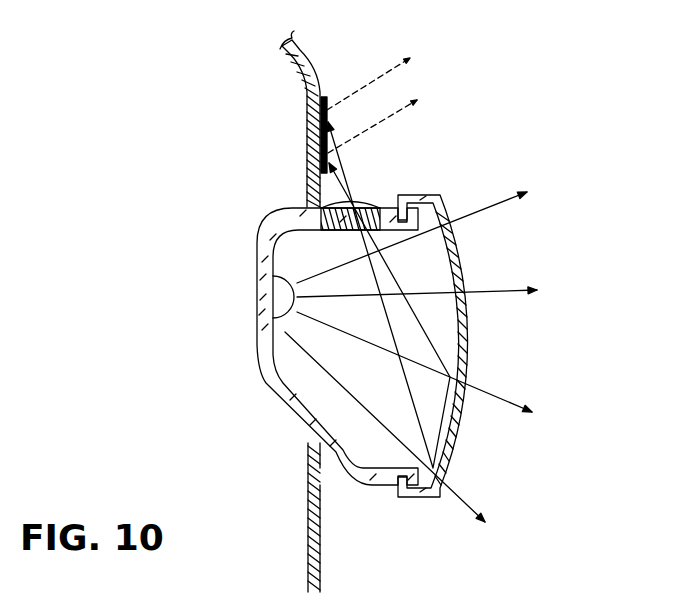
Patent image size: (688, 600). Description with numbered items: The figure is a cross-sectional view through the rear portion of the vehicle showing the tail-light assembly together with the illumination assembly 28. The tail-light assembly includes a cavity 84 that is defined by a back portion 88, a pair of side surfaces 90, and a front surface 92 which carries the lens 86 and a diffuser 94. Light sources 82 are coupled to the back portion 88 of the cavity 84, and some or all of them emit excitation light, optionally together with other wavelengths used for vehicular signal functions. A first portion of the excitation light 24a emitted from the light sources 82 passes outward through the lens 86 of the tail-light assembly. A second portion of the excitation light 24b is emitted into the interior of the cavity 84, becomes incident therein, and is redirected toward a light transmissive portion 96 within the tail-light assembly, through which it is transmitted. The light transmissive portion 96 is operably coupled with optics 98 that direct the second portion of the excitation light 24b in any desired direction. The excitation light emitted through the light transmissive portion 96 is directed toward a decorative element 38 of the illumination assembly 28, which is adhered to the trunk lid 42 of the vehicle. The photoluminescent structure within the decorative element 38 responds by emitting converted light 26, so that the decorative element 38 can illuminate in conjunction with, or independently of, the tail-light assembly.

The trunk lid 42 is at (312, 53).
The illumination assembly 28 is at (323, 89).
The decorative element 38 is at (327, 103).
The converted light 26 is at (388, 72).
The second portion of the excitation light 24b is at (341, 158).
The first portion of the excitation light 24a is at (493, 208).
The optics 98 is at (377, 207).
The light transmissive portion 96 is at (382, 201).
The light source 82 is at (273, 295).
The back portion 88 is at (262, 340).
The side surface 90 is at (310, 378).
The front surface 92 is at (466, 330).
The lens 86 is at (467, 355).
The diffuser 94 is at (458, 430).
The cavity 84 is at (377, 440).